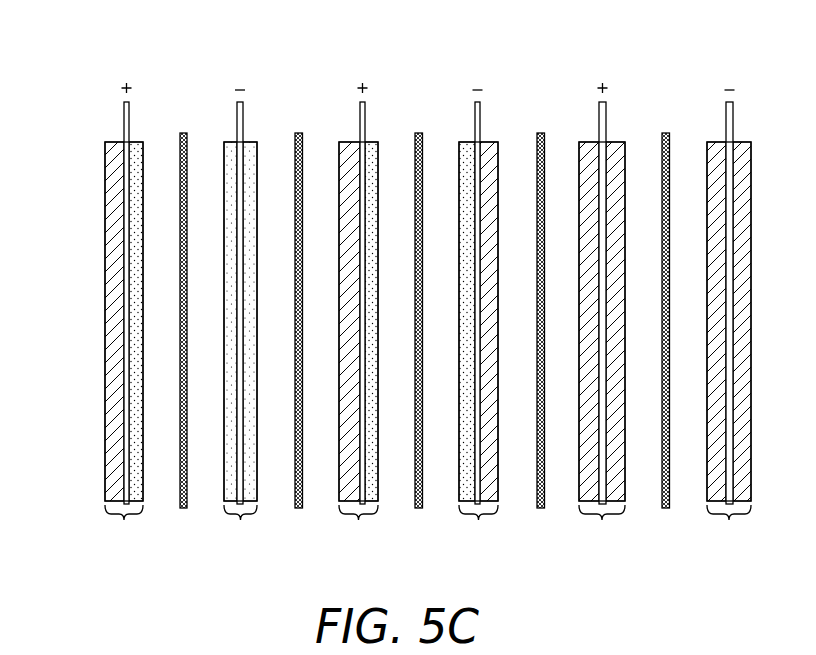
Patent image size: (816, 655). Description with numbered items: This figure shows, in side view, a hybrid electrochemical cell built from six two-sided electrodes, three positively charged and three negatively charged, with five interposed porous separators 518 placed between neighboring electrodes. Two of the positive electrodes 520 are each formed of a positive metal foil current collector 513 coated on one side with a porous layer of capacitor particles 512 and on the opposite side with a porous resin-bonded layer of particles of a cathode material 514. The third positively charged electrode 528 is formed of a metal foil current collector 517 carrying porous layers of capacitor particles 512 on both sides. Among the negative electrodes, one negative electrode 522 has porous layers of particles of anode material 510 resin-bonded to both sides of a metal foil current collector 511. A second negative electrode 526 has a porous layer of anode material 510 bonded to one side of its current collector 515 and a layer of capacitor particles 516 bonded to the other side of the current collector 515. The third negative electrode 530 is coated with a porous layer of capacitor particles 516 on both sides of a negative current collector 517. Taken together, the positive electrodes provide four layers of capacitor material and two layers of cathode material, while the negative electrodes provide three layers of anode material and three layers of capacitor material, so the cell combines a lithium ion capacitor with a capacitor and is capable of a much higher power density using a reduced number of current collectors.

The anode material particles 510 is at (232, 145).
The metal foil current collector 511 is at (237, 108).
The capacitor particles 512 is at (110, 245).
The metal foil current collector 513 is at (123, 113).
The active cathode material particles 514 is at (135, 302).
The current collector 515 is at (480, 110).
The capacitor particles 516 is at (489, 140).
The metal foil current collector 517 is at (606, 107).
The porous separator 518 is at (183, 133).
The positive electrode 520 is at (101, 556).
The negative electrode 522 is at (264, 556).
The second negative electrode 526 is at (502, 556).
The third positively charged electrode 528 is at (579, 556).
The third negative electrode 530 is at (706, 556).